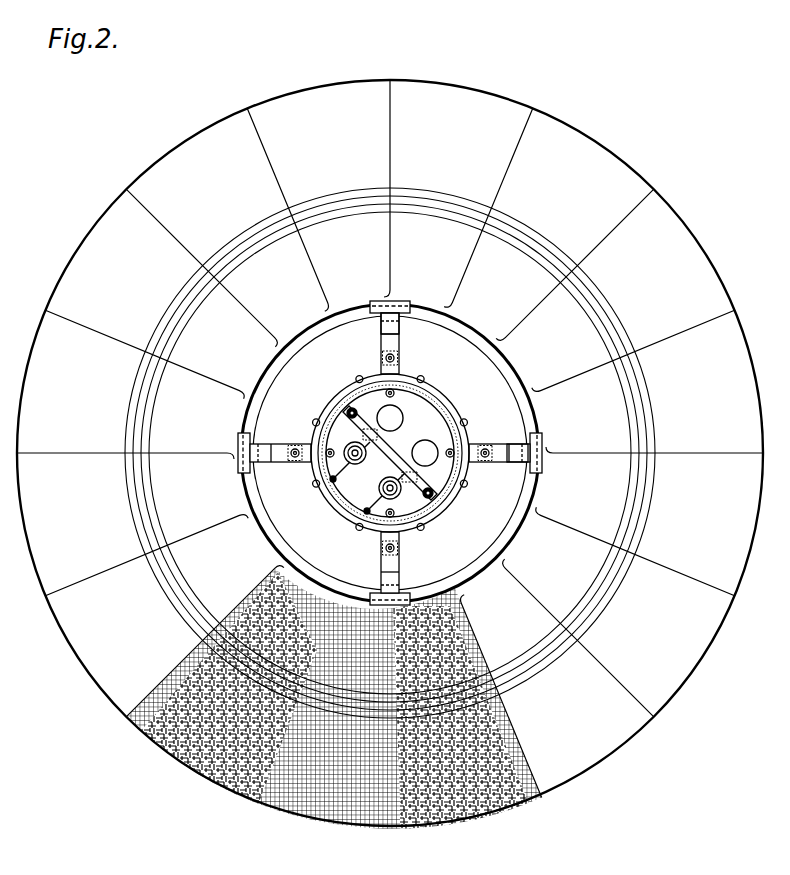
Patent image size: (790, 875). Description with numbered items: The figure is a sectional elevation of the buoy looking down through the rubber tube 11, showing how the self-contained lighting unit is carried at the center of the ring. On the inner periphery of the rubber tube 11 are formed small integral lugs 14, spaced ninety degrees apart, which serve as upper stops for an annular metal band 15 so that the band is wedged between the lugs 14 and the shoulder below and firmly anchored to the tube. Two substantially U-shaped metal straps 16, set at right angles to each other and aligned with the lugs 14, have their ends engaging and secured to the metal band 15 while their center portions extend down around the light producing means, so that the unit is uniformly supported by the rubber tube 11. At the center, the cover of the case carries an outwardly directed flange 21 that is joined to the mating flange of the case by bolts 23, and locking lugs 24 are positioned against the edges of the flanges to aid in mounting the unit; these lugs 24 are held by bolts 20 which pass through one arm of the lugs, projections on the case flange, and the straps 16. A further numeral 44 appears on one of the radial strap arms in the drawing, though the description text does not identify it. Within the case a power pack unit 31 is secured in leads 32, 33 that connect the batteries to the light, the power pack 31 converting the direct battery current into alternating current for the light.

The rubber tube 11 is at (150, 730).
The lugs 14 is at (373, 313).
The metal band 15 is at (290, 531).
The metal straps 16 is at (513, 444).
The bolts 20 is at (383, 544).
The flange 21 is at (297, 443).
The bolts 23 is at (318, 487).
The locking lugs 24 is at (399, 340).
The power pack unit 31 is at (402, 422).
The lead 32 is at (349, 461).
The lead 33 is at (383, 487).
The arm 44 is at (523, 466).